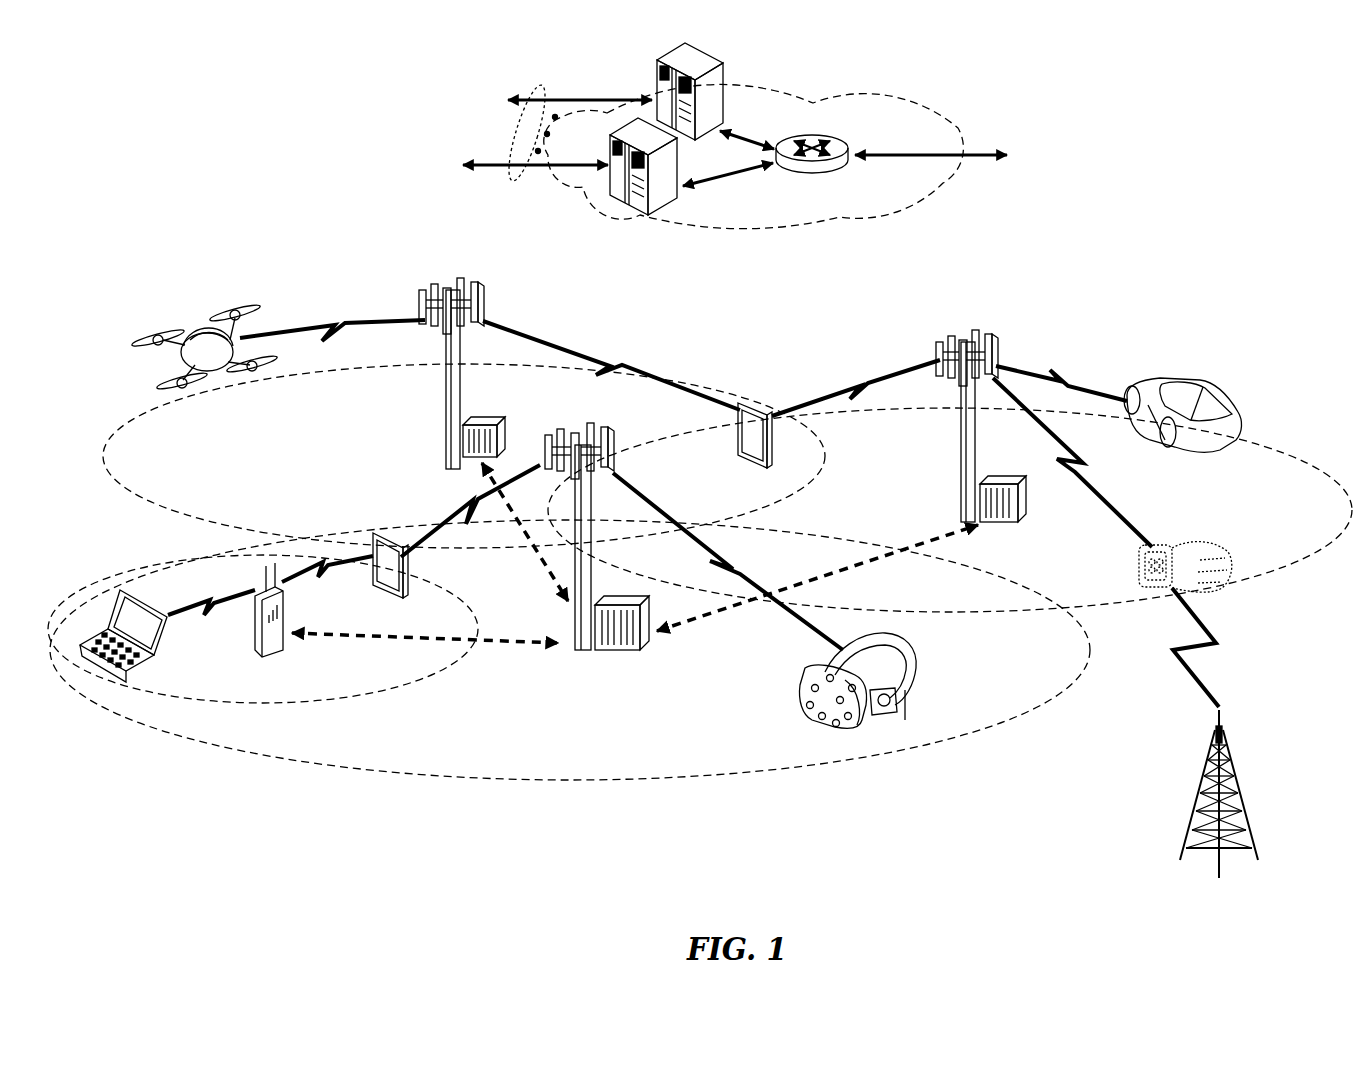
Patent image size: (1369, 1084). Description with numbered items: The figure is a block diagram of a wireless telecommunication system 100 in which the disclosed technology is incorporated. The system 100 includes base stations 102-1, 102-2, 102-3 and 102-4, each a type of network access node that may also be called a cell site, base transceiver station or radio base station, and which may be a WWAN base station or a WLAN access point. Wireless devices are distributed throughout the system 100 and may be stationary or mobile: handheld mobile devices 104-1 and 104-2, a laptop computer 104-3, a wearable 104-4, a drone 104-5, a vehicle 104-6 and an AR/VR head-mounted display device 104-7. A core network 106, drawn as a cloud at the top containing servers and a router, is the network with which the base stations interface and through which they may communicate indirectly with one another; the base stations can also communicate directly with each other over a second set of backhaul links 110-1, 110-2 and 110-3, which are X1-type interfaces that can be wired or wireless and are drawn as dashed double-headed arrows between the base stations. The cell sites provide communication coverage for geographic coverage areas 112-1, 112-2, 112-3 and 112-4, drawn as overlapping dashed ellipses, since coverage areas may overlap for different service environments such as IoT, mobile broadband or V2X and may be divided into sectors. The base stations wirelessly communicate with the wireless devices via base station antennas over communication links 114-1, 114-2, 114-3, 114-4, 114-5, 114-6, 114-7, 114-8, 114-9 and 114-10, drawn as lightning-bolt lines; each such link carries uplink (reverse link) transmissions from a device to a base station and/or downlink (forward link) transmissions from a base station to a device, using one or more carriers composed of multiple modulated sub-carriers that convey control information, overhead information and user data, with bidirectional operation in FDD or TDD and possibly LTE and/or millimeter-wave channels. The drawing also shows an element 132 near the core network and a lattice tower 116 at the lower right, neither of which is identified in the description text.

The wireless telecommunication system 100 is at (1256, 146).
The core network 106 is at (860, 222).
The backhaul / beam 132 is at (520, 182).
The base station 102-1 is at (580, 652).
The base station 102-2 is at (446, 408).
The base station 102-3 is at (961, 440).
The base station 102-4 is at (256, 640).
The wireless device 104-1 is at (408, 580).
The wireless device 104-2 is at (735, 445).
The wireless device 104-3 is at (98, 682).
The wireless device 104-4 is at (1165, 540).
The wireless device 104-5 is at (215, 373).
The wireless device 104-6 is at (1210, 395).
The wireless device 104-7 is at (917, 670).
The backhaul link 110-1 is at (325, 642).
The backhaul link 110-2 is at (887, 565).
The backhaul link 110-3 is at (538, 556).
The geographic coverage area 112-1 is at (508, 781).
The geographic coverage area 112-2 is at (388, 693).
The geographic coverage area 112-3 is at (167, 512).
The geographic coverage area 112-4 is at (1245, 437).
The communication link 114-1 is at (745, 564).
The communication link 114-2 is at (468, 515).
The communication link 114-3 is at (203, 614).
The communication link 114-4 is at (323, 580).
The communication link 114-5 is at (330, 320).
The communication link 114-6 is at (612, 360).
The communication link 114-7 is at (855, 380).
The communication link 114-8 is at (1090, 478).
The communication link 114-9 is at (1060, 372).
The communication link 114-10 is at (1200, 650).
The transmission tower 116 is at (1235, 778).